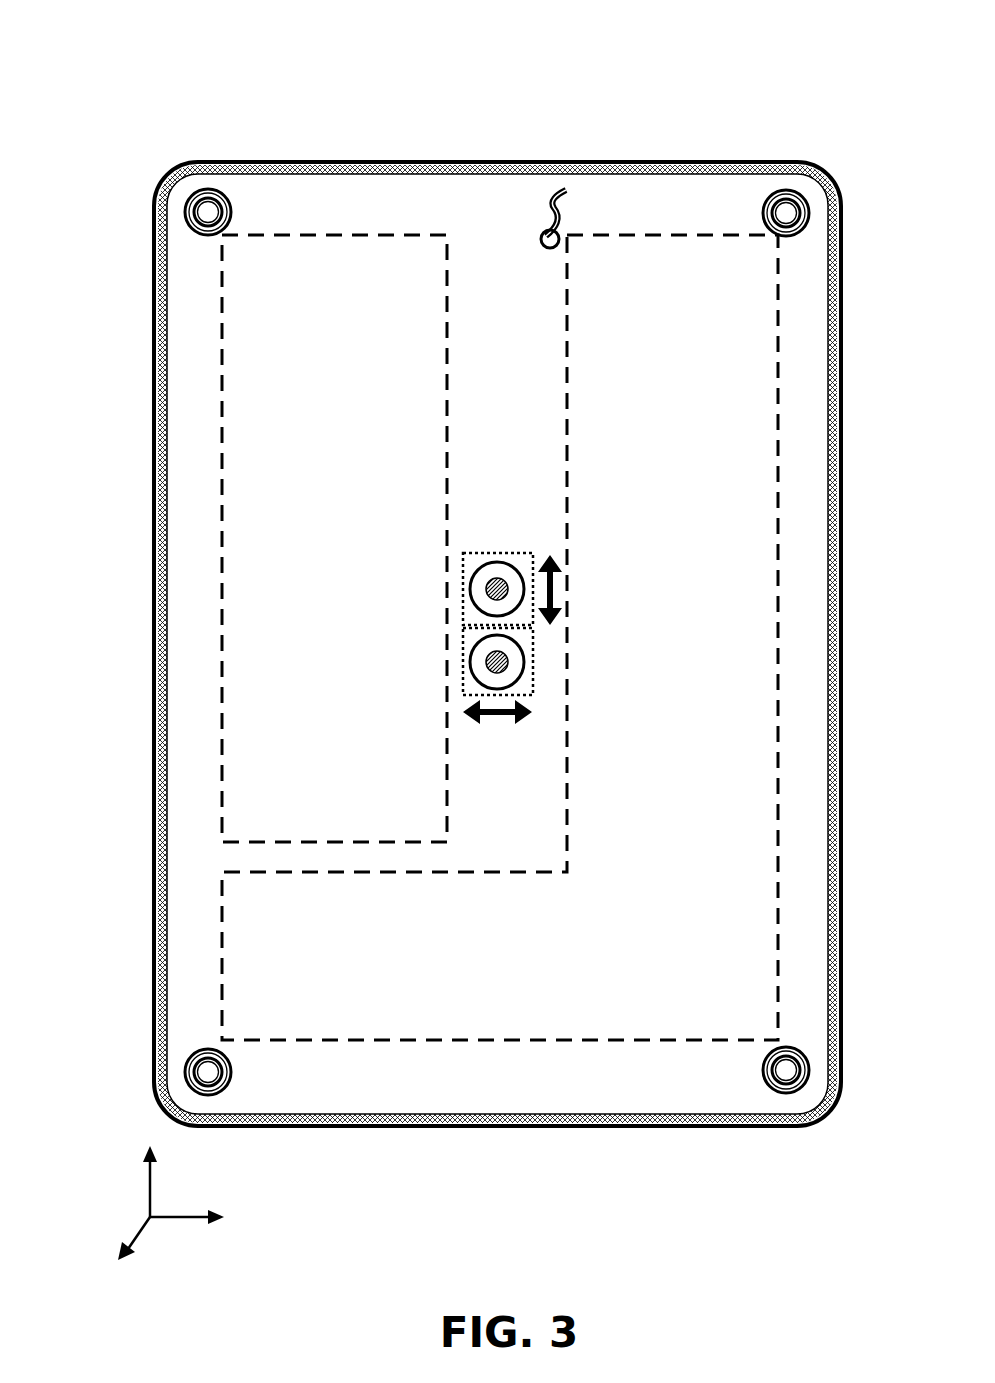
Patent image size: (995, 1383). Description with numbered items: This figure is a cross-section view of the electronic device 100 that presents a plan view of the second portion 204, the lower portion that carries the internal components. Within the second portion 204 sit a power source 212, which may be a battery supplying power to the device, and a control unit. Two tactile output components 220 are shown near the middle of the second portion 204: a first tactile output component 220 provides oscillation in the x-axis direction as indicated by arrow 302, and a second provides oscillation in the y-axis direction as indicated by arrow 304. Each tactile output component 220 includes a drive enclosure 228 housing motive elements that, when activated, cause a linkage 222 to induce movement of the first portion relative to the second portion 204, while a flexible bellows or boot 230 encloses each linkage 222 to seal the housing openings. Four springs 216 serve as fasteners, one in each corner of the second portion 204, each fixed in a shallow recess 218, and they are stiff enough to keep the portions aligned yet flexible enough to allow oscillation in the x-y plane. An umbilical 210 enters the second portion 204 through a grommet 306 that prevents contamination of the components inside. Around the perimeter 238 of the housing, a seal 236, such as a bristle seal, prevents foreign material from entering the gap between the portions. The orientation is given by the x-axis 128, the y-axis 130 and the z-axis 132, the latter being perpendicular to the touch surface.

The electronic device 100 is at (178, 42).
The second portion 204 is at (330, 161).
The umbilical 210 is at (562, 203).
The power source 212 is at (334, 538).
The springs 216 is at (230, 213).
The shallow recess 218 is at (194, 205).
The tactile output component 220 is at (507, 619).
The linkage 222 is at (492, 584).
The drive enclosure 228 is at (463, 553).
The flexible bellows or boot 230 is at (473, 600).
The seal 236 is at (495, 644).
The perimeter 238 is at (469, 618).
The arrow 302 is at (498, 720).
The arrow 304 is at (556, 590).
The grommet 306 is at (540, 240).
The x-axis 128 is at (190, 1217).
The y-axis 130 is at (150, 1183).
The z-axis 132 is at (132, 1246).